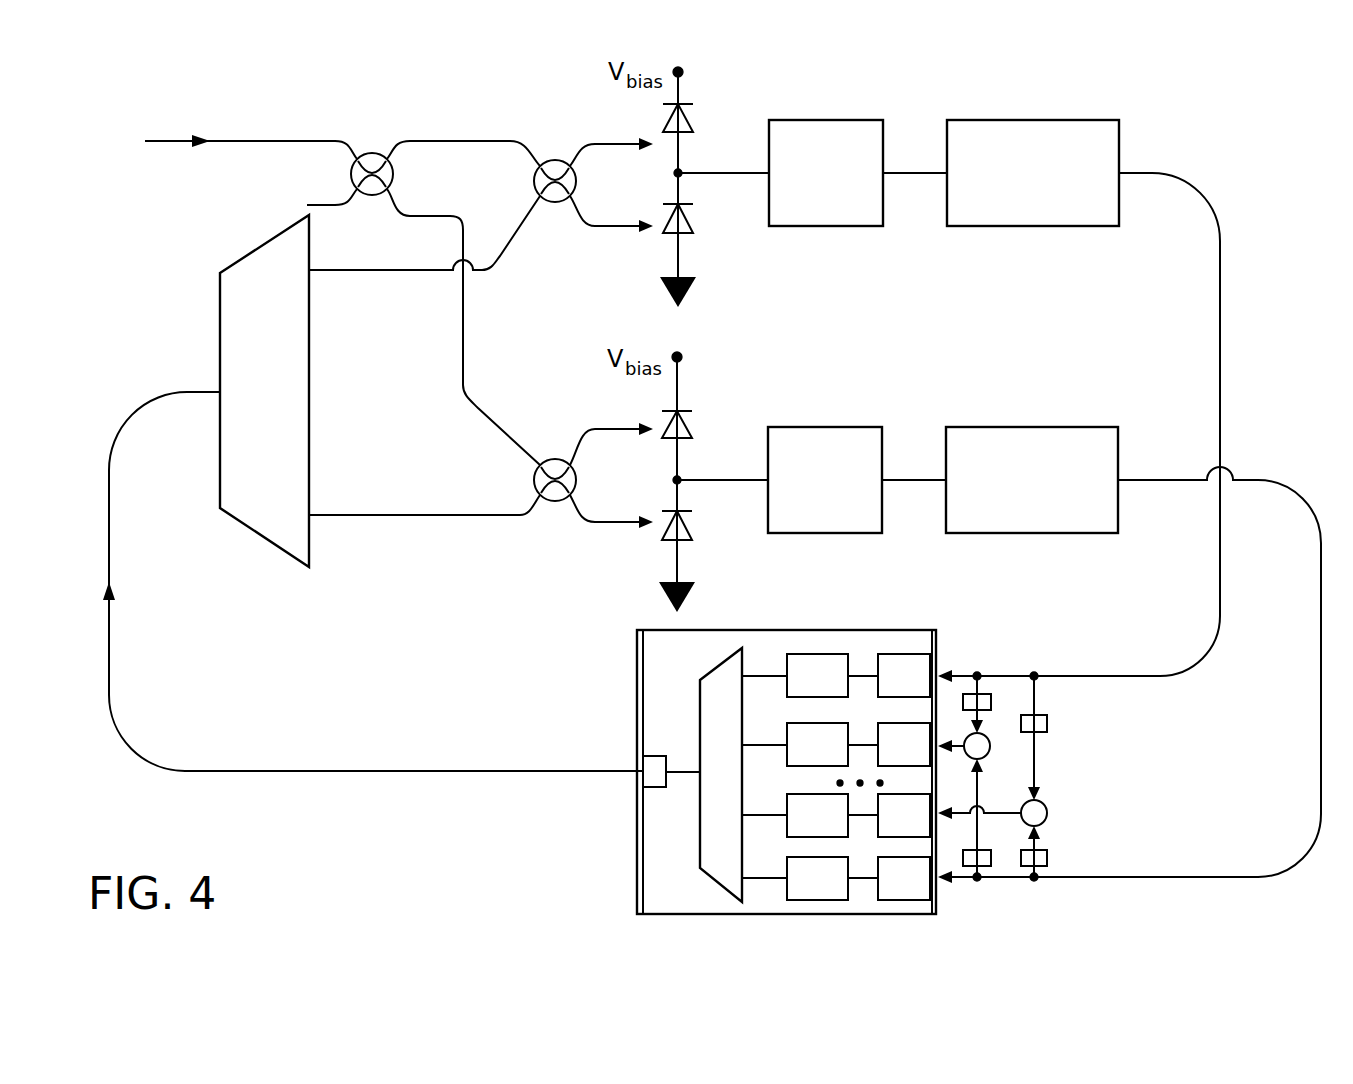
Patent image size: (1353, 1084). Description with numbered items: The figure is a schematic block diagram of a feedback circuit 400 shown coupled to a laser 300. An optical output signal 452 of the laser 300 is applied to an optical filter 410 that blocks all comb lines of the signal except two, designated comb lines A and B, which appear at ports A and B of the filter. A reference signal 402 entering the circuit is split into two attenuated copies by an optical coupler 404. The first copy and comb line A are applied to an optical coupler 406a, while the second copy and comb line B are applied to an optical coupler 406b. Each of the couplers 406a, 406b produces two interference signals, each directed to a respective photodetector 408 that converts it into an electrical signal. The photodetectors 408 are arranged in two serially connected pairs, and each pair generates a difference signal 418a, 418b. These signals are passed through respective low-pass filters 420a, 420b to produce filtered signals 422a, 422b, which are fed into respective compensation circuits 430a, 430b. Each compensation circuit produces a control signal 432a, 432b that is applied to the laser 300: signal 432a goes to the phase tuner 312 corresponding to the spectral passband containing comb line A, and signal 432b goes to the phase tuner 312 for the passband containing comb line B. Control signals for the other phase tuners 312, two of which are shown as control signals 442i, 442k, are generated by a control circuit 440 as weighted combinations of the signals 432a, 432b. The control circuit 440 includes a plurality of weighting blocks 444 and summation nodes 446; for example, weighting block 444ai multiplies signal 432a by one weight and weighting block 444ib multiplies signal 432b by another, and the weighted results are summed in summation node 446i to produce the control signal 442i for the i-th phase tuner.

The feedback circuit 400 is at (1184, 103).
The reference signal 402 is at (175, 143).
The optical coupler 404 is at (366, 151).
The optical coupler 406a is at (556, 152).
The optical coupler 406b is at (556, 508).
The photodetector 408 is at (688, 120).
The optical filter 410 is at (258, 534).
The signal 418a is at (694, 172).
The signal 418b is at (694, 479).
The low-pass filter 420a is at (820, 120).
The low-pass filter 420b is at (818, 427).
The filtered signal 422a is at (917, 174).
The filtered signal 422b is at (913, 481).
The compensation circuit 430a is at (1010, 120).
The compensation circuit 430b is at (1010, 427).
The control signal 432a is at (1220, 322).
The control signal 432b is at (1321, 578).
The laser 300 is at (797, 630).
The phase tuner 312 is at (938, 650).
The control circuit 440 is at (1118, 905).
The control signal 442i is at (958, 745).
The control signal 442k is at (1007, 813).
The weighting block 444 is at (1045, 727).
The weighting block 444ai is at (986, 700).
The weighting block 444ib is at (983, 866).
The summation node 446 is at (1045, 806).
The summation node 446i is at (988, 750).
The optical output signal 452 is at (530, 771).